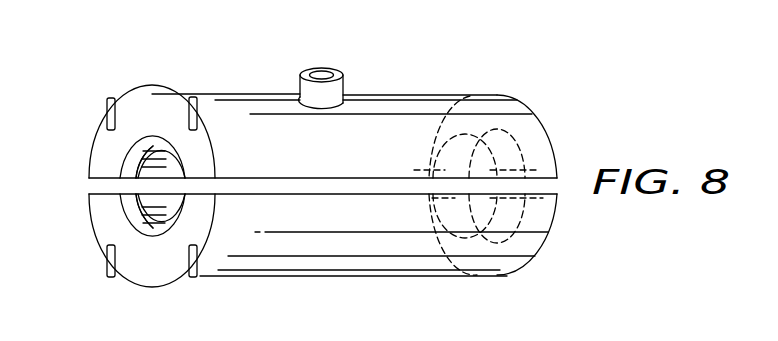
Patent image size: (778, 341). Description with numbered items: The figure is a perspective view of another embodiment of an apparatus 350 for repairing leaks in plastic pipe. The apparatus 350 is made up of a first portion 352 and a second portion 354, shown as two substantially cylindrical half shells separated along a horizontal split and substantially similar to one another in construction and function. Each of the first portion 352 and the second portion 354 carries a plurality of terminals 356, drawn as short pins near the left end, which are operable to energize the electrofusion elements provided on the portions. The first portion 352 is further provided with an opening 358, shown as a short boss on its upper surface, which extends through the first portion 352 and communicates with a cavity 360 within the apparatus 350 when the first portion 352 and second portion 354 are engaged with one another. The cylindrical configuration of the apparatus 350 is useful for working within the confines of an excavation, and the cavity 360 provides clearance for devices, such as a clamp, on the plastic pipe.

The apparatus 350 is at (481, 77).
The first portion 352 is at (402, 105).
The second portion 354 is at (332, 267).
The terminals 356 is at (107, 101).
The opening 358 is at (320, 72).
The cavity 360 is at (174, 190).